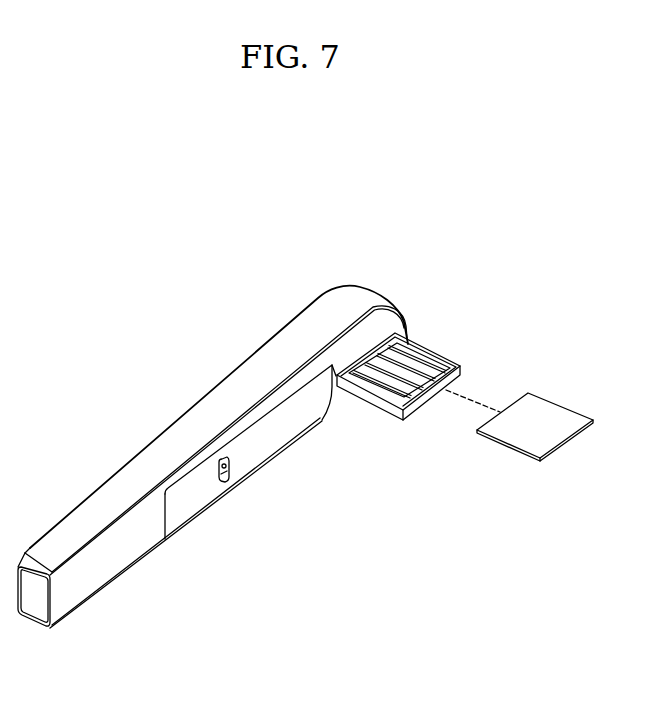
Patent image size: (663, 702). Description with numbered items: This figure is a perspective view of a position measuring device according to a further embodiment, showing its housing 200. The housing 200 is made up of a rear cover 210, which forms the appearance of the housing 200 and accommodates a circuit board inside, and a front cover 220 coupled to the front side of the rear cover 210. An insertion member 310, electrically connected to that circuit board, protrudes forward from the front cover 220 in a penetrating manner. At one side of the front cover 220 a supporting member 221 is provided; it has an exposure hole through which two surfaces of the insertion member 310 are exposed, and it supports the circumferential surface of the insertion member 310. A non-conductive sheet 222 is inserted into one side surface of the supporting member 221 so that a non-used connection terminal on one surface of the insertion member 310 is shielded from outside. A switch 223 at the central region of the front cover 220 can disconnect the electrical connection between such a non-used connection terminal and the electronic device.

The housing 200 is at (213, 465).
The rear cover 210 is at (75, 530).
The front cover 220 is at (82, 585).
The supporting member 221 is at (435, 348).
The non-conductive sheet 222 is at (542, 418).
The switch 223 is at (229, 462).
The insertion member 310 is at (397, 378).